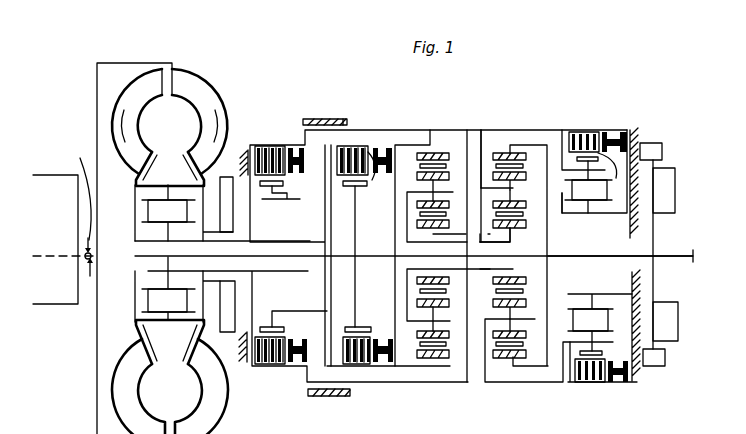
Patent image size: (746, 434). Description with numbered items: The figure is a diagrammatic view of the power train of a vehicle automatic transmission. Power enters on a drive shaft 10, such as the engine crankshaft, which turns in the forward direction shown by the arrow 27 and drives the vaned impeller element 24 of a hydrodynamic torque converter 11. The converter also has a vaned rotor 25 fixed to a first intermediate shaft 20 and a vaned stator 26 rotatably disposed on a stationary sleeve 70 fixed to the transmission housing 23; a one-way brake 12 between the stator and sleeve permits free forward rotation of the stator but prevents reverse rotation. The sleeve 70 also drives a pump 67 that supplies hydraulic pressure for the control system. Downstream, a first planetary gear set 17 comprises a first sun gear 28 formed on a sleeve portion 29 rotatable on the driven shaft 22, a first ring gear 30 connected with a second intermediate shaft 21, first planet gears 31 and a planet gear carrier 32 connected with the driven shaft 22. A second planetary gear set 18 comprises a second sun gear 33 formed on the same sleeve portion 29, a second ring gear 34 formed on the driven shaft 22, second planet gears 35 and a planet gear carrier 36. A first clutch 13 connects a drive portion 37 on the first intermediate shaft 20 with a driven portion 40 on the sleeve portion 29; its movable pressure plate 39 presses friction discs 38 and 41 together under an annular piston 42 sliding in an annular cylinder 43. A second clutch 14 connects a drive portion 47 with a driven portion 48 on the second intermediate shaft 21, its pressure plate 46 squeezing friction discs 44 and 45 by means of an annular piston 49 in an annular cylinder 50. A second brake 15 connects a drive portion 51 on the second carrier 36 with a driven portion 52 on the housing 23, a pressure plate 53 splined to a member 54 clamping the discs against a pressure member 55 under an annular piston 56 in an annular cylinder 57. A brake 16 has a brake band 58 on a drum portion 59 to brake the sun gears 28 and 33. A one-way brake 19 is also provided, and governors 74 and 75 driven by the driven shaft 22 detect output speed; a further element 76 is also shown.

The drive shaft 10 is at (89, 270).
The hydrodynamic torque converter 11 is at (208, 80).
The one-way brake 12 is at (196, 206).
The first clutch 13 is at (267, 138).
The second clutch 14 is at (358, 136).
The second brake 15 is at (593, 120).
The brake 16 is at (322, 112).
The first planetary gear set 17 is at (447, 135).
The second planetary gear set 18 is at (503, 135).
The one-way brake 19 is at (562, 202).
The first intermediate shaft 20 is at (143, 258).
The second intermediate shaft 21 is at (373, 255).
The driven shaft 22 is at (693, 262).
The transmission housing 23 is at (247, 150).
The vaned impeller element 24 is at (201, 145).
The vaned rotor 25 is at (116, 138).
The vaned stator 26 is at (158, 176).
The arrow 27 is at (74, 191).
The first sun gear 28 is at (461, 233).
The sleeve portion 29 is at (440, 250).
The first ring gear 30 is at (423, 153).
The first planet gears 31 is at (420, 178).
The planet gear carrier 32 is at (417, 230).
The second sun gear 33 is at (511, 228).
The second ring gear 34 is at (518, 153).
The second planet gears 35 is at (521, 179).
The planet gear carrier 36 is at (486, 131).
The drive portion 37 is at (282, 186).
The friction disc 38 is at (258, 146).
The movable pressure plate 39 is at (290, 178).
The driven portion 40 is at (289, 147).
The friction disc 41 is at (262, 186).
The annular piston 42 is at (301, 160).
The annular cylinder 43 is at (304, 160).
The friction disc 44 is at (366, 178).
The friction disc 45 is at (362, 186).
The movable pressure plate 46 is at (372, 146).
The drive portion 47 is at (362, 146).
The driven portion 48 is at (343, 186).
The annular piston 49 is at (380, 146).
The annular cylinder 50 is at (388, 146).
The drive portion 51 is at (607, 190).
The driven portion 52 is at (587, 131).
The movable pressure plate 53 is at (604, 131).
The member 54 is at (581, 131).
The pressure member 55 is at (576, 131).
The annular piston 56 is at (621, 131).
The annular cylinder 57 is at (633, 132).
The brake band 58 is at (312, 118).
The drum portion 59 is at (355, 118).
The pump 67 is at (233, 334).
The stationary sleeve 70 is at (225, 254).
The governor 74 is at (679, 315).
The governor 75 is at (676, 192).
The control link 76 is at (135, 250).